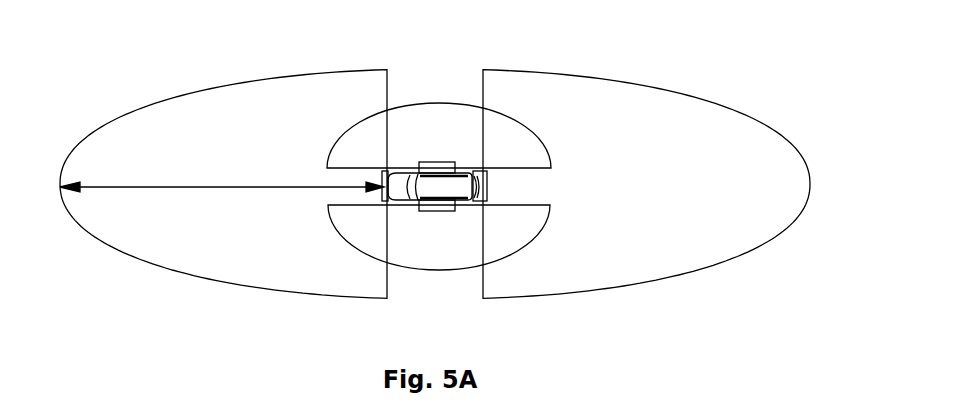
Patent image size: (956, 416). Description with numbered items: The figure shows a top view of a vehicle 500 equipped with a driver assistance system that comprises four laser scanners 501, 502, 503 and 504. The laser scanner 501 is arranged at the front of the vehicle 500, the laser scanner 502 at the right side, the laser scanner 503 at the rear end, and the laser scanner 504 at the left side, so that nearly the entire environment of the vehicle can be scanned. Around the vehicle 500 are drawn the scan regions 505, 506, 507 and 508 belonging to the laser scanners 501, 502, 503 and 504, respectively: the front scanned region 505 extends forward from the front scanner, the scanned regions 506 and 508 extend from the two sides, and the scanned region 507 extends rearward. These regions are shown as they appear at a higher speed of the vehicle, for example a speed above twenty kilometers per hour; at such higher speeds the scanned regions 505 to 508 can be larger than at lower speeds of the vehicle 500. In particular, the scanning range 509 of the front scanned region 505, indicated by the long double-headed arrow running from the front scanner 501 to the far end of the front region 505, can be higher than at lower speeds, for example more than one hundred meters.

The vehicle 500 is at (460, 183).
The laser scanner 501 is at (380, 178).
The laser scanner 502 is at (432, 161).
The laser scanner 503 is at (487, 180).
The laser scanner 504 is at (437, 211).
The scan region 505 is at (132, 112).
The scan region 506 is at (398, 103).
The scan region 507 is at (718, 102).
The scan region 508 is at (413, 271).
The scanning range 509 is at (215, 189).